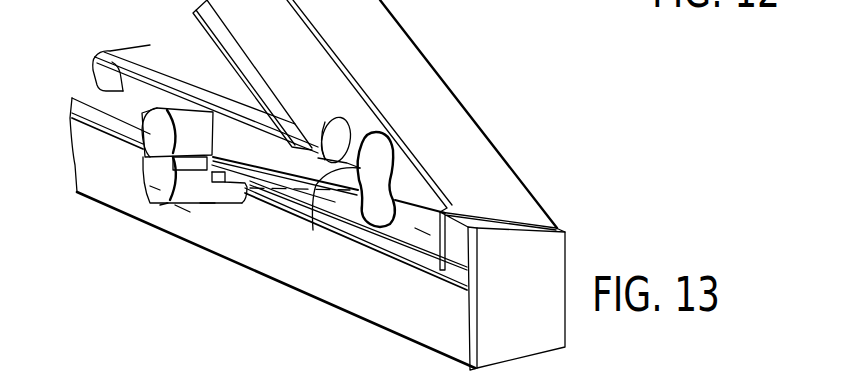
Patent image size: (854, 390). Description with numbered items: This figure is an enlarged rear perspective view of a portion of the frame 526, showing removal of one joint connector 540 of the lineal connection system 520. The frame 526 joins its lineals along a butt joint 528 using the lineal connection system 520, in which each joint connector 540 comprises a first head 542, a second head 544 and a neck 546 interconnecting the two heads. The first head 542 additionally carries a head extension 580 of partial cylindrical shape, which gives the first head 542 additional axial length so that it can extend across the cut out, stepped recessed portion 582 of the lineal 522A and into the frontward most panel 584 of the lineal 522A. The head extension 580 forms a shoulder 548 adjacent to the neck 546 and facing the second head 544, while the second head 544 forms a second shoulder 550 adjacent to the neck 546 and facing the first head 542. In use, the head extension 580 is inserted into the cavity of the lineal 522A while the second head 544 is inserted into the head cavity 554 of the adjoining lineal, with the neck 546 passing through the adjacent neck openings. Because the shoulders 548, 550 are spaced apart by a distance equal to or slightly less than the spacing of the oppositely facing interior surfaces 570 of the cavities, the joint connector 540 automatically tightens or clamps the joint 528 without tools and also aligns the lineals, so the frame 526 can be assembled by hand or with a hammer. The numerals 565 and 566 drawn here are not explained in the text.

The lineal 522A is at (358, 322).
The stepped recessed portion 582 is at (100, 66).
The frontward most panel 584 is at (135, 53).
The second head 544 is at (190, 115).
The head cavity 554 is at (342, 117).
The frame 526 is at (470, 59).
The lineal connection system 520 is at (397, 154).
The butt joint 528 is at (443, 200).
The second shoulder 550 is at (170, 158).
The neck 546 is at (155, 186).
The lower body feature 565 is at (153, 184).
The lower body feature 566 is at (160, 205).
The joint connector 540 is at (178, 205).
The shoulder 548 is at (182, 163).
The first head 542 is at (207, 200).
The head extension 580 is at (232, 203).
The interior surfaces 570 is at (314, 228).